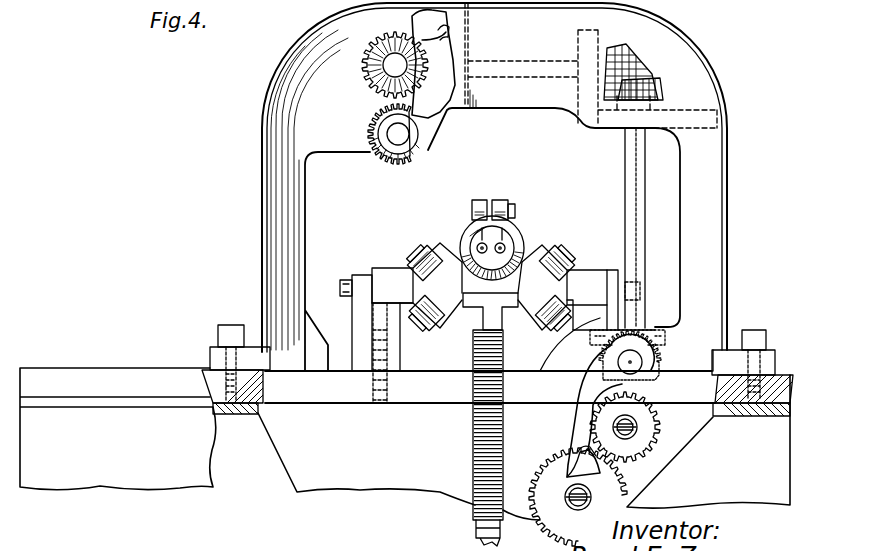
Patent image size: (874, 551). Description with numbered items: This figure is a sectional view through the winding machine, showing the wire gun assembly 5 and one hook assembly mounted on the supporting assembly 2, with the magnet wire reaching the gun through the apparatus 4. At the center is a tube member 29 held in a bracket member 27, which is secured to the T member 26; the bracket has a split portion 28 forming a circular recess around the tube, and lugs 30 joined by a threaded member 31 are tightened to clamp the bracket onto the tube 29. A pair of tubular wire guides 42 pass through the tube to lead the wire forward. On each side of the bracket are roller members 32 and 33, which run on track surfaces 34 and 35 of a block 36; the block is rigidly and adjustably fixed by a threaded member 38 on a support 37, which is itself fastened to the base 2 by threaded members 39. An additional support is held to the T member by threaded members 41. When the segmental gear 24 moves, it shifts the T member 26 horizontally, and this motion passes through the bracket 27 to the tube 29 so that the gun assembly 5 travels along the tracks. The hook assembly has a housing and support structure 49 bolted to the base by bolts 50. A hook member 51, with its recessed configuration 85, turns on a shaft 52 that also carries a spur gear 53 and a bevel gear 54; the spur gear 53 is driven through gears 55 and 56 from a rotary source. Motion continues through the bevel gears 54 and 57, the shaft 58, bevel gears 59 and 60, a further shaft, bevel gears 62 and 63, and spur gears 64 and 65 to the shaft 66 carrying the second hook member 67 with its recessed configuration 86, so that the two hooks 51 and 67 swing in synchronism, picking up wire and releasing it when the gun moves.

The supporting assembly 2 is at (165, 480).
The apparatus 4 is at (252, 112).
The wire gun assembly 5 is at (548, 223).
The segmental gear 24 is at (480, 474).
The T member 26 is at (486, 319).
The bracket member 27 is at (459, 262).
The split portion 28 is at (522, 237).
The tube member 29 is at (478, 241).
The lugs 30 is at (497, 200).
The threaded member 31 is at (515, 210).
The roller member 32 is at (420, 266).
The roller member 33 is at (432, 332).
The track surface 34 is at (392, 272).
The track surface 35 is at (413, 300).
The block 36 is at (388, 277).
The support 37 is at (362, 348).
The threaded member 38 is at (342, 288).
The threaded members 39 is at (364, 406).
The threaded members 41 is at (528, 61).
The tubular wire guides 42 is at (480, 247).
The housing and support structure 49 is at (280, 246).
The bolts 50 is at (224, 385).
The hook member 51 is at (622, 463).
The shaft 52 is at (628, 362).
The spur gear 53 is at (662, 360).
The bevel gear 54 is at (666, 350).
The gear 55 is at (661, 427).
The gear 56 is at (550, 468).
The bevel gear 57 is at (668, 336).
The shaft 58 is at (632, 206).
The bevel gear 59 is at (654, 86).
The bevel gear 60 is at (634, 62).
The bevel gear 62 is at (386, 41).
The bevel gear 63 is at (366, 57).
The spur gear 64 is at (368, 86).
The spur gear 65 is at (371, 132).
The shaft 66 is at (395, 136).
The second hook member 67 is at (416, 26).
The recessed configuration 85 is at (582, 452).
The recessed configuration 86 is at (451, 31).